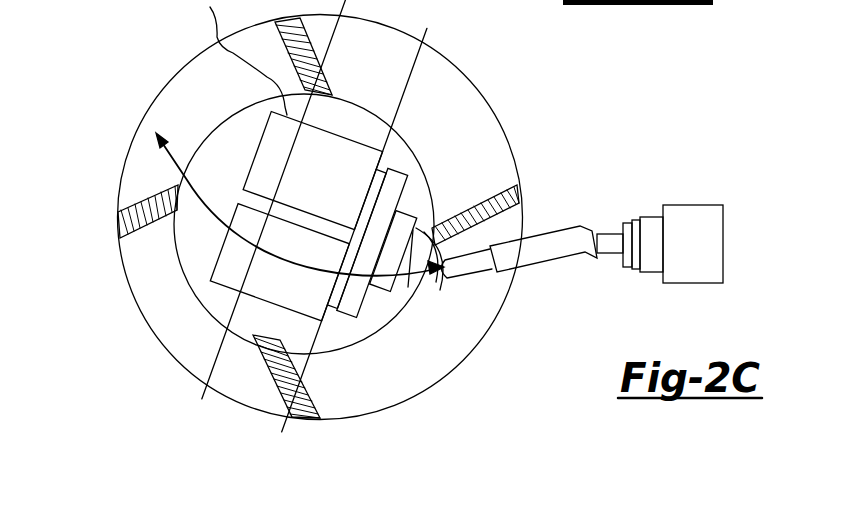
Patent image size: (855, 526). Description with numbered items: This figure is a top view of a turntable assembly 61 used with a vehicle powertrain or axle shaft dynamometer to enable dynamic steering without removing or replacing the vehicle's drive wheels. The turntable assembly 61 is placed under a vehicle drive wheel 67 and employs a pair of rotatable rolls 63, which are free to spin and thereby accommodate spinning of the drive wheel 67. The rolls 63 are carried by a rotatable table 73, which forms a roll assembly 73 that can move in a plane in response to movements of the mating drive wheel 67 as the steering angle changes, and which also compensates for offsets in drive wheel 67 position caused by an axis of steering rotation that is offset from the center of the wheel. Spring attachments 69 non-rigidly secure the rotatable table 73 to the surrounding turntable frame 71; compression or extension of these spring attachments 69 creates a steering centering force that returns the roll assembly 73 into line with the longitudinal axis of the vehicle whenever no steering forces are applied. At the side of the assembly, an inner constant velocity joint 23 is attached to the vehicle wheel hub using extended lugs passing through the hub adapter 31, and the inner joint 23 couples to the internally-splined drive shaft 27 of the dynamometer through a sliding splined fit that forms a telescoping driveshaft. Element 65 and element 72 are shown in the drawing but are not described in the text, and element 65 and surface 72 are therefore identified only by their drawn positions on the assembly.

The turntable assembly 61 is at (132, 334).
The rotatable rolls 63 is at (272, 152).
The rotor body 65 is at (468, 118).
The vehicle drive wheel 67 is at (422, 37).
The spring attachments 69 is at (137, 212).
The turntable frame 71 is at (487, 337).
The magnet surface 72 is at (245, 57).
The rotatable table 73 is at (337, 325).
The inner hub flange adapter 31 is at (422, 232).
The inner Constant Velocity Joint 23 is at (426, 285).
The internally-splined drive shaft 27 is at (552, 258).